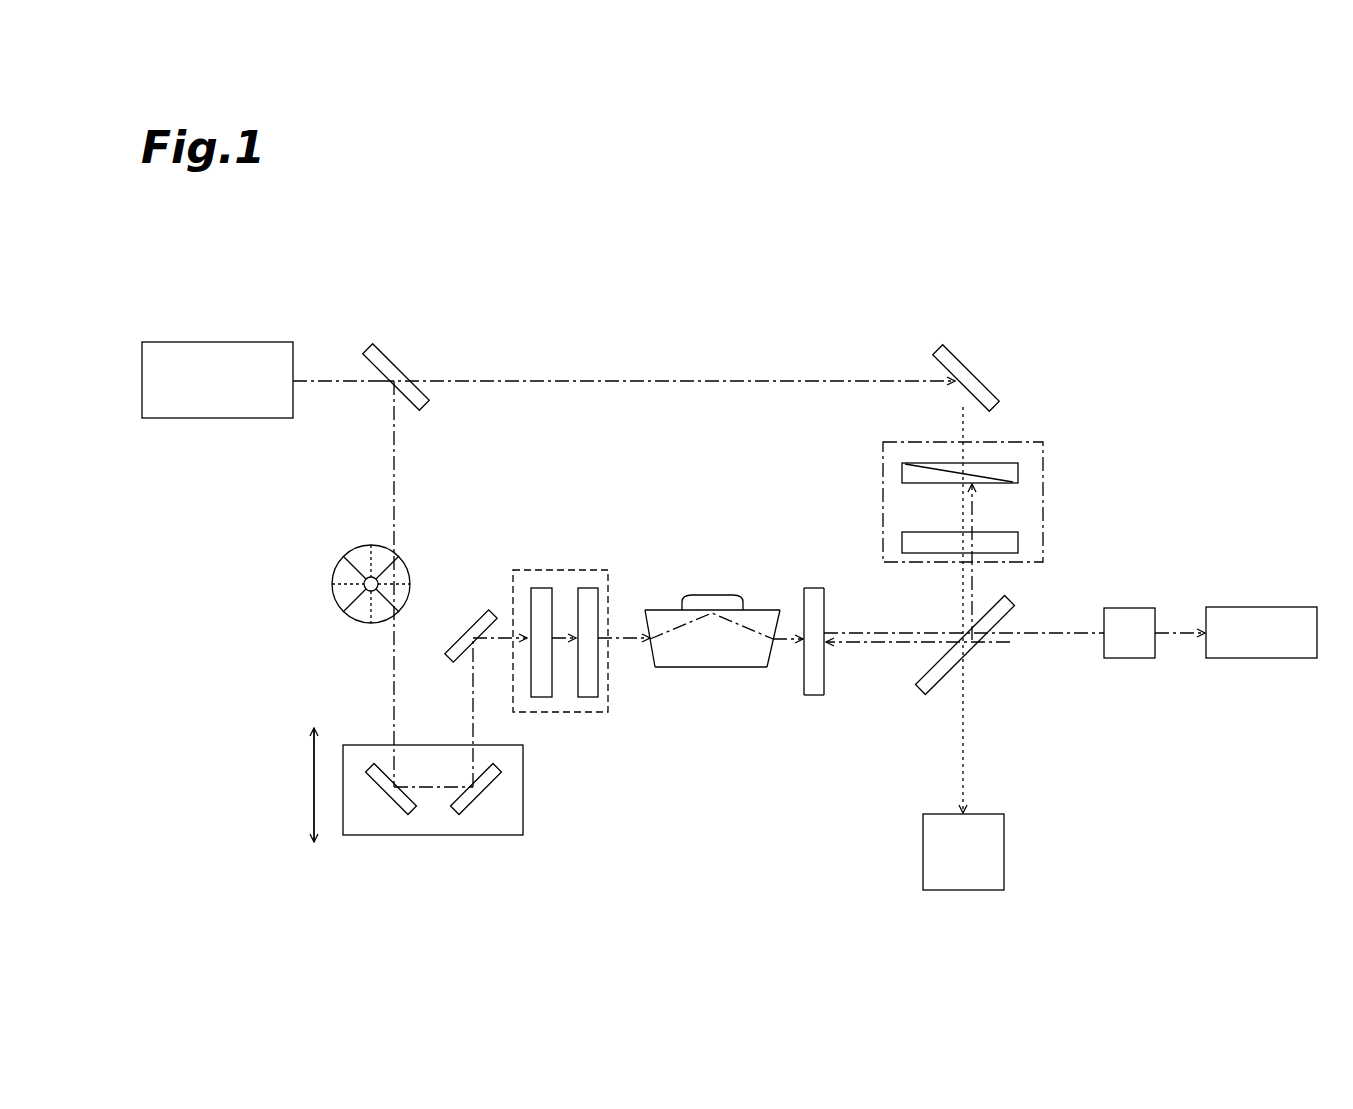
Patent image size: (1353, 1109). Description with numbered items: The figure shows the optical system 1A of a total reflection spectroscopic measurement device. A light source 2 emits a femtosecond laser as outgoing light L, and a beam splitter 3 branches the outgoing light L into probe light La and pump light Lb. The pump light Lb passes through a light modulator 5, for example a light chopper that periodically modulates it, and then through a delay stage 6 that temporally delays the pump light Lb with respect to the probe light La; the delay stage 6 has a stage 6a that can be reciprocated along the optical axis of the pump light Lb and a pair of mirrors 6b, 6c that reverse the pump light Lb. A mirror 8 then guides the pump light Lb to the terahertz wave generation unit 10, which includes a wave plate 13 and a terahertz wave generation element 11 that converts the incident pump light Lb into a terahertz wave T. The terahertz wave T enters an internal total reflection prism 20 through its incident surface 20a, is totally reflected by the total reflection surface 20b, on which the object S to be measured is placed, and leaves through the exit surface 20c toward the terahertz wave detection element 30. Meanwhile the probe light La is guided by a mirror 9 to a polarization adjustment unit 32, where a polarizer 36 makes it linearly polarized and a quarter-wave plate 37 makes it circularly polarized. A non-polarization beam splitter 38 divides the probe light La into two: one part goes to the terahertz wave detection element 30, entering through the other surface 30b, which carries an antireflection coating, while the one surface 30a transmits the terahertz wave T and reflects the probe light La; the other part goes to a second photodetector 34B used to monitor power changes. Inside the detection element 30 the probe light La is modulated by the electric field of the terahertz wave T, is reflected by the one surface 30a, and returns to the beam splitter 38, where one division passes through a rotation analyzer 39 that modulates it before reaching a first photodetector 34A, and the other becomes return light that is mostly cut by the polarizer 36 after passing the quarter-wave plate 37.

The optical system 1A is at (218, 254).
The light source 2 is at (169, 341).
The beam splitter 3 is at (387, 351).
The light modulator 5 is at (334, 603).
The delay stage 6 is at (448, 811).
The stage 6a is at (524, 806).
The mirror 6b is at (377, 795).
The mirror 6c is at (494, 795).
The mirror 8 is at (470, 616).
The mirror 9 is at (957, 353).
The terahertz wave generation unit 10 is at (560, 649).
The terahertz wave generation element 11 is at (586, 587).
The wave plate 13 is at (540, 587).
The internal total reflection prism 20 is at (712, 631).
The incident surface 20a is at (653, 668).
The total reflection surface 20b is at (655, 609).
The exit surface 20c is at (771, 668).
The object S is at (710, 595).
The terahertz wave T is at (622, 642).
The terahertz wave detection element 30 is at (816, 612).
The one surface 30a is at (803, 592).
The other surface 30b is at (826, 605).
The polarization adjustment unit 32 is at (975, 502).
The polarizer 36 is at (901, 472).
The λ/4 wave plate 37 is at (901, 541).
The non-polarization beam splitter 38 is at (1016, 600).
The rotation analyzer 39 is at (1133, 607).
The first photodetector 34A is at (1281, 606).
The second photodetector 34B is at (1005, 834).
The outgoing light L is at (327, 378).
The probe light La is at (802, 379).
The pump light Lb is at (398, 437).